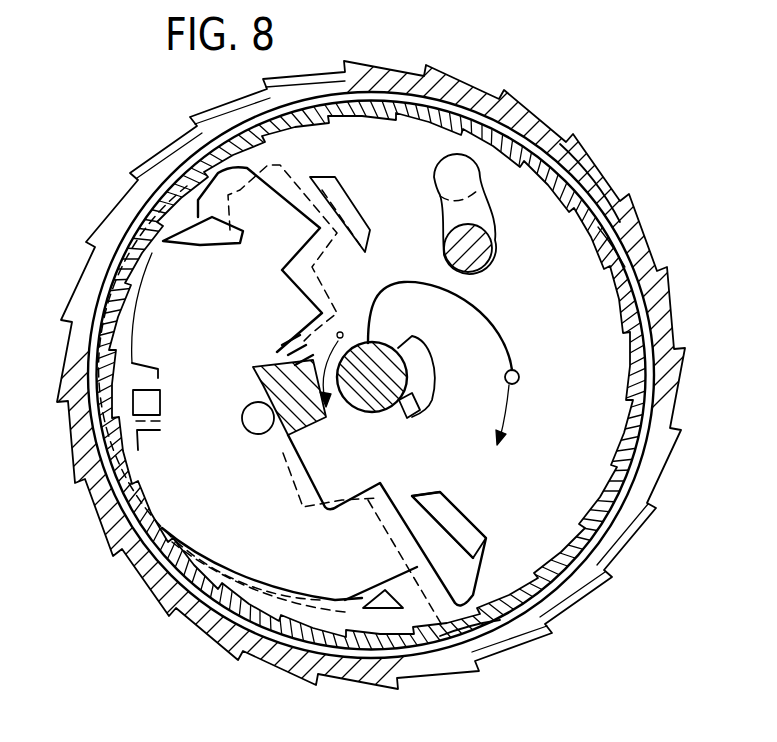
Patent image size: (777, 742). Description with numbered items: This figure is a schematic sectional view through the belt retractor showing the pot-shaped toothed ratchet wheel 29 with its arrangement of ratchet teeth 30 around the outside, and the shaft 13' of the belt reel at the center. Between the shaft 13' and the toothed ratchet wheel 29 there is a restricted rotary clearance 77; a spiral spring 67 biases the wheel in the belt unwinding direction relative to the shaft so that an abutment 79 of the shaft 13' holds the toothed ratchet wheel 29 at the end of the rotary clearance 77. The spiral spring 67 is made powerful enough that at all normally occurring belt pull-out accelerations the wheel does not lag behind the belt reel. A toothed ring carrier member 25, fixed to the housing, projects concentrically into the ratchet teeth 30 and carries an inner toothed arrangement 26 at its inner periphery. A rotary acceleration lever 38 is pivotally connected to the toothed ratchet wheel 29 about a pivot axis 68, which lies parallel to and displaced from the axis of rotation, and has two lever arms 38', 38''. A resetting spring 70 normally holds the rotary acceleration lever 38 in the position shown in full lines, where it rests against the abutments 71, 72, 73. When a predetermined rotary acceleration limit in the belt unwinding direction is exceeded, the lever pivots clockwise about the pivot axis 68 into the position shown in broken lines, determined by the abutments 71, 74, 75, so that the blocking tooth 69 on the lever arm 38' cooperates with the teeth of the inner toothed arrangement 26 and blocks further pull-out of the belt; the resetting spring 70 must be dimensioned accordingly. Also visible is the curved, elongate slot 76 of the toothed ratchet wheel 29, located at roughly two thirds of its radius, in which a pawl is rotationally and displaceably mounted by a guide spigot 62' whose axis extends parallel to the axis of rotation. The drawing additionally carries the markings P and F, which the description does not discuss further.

The ratchet teeth 30 is at (433, 70).
The toothed ratchet wheel 29 is at (521, 118).
The toothed ring carrier member 25 is at (625, 251).
The inner toothed arrangement 26 is at (613, 275).
The rotary acceleration lever 38 is at (368, 375).
The lever arm 38' is at (262, 603).
The lever arm 38'' is at (187, 393).
The abutment 72 is at (188, 220).
The resetting spring 70 is at (270, 358).
The pivot axis 68 is at (254, 414).
The shaft 13' is at (390, 374).
The rotary clearance 77 is at (414, 365).
The abutment 79 is at (415, 406).
The spiral spring 67 is at (462, 312).
The force direction F is at (511, 397).
The pivot point P is at (341, 332).
The abutment 75 is at (348, 200).
The elongate slot 76 is at (482, 210).
The guide spigot 62' is at (485, 250).
The abutment 71 is at (147, 402).
The abutment 73 is at (460, 528).
The abutment 74 is at (388, 600).
The blocking tooth 69 is at (472, 598).